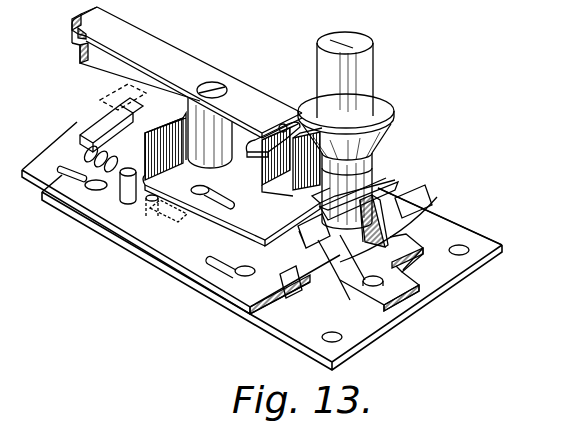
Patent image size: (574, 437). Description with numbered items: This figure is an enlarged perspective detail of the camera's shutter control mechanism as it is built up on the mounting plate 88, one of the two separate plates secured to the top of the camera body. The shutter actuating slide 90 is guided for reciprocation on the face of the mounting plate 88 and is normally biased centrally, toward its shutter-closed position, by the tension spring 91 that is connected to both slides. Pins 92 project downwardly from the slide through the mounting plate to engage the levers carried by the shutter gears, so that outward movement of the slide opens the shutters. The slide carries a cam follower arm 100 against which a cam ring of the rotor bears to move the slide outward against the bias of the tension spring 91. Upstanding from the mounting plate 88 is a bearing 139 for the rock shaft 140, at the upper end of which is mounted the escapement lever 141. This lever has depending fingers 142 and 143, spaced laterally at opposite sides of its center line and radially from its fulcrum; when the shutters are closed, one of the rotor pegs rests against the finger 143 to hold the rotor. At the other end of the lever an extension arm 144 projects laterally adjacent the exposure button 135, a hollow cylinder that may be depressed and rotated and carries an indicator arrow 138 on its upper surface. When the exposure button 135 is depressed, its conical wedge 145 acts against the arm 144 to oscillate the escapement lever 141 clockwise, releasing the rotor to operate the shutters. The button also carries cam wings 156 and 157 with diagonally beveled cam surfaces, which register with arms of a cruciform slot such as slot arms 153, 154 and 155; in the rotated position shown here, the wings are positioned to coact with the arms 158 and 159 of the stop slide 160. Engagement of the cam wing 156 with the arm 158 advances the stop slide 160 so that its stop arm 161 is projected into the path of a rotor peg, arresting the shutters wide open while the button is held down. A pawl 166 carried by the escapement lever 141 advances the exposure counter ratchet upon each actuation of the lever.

The mounting plate 88 is at (290, 318).
The shutter actuating slide 90 is at (190, 256).
The tension spring 91 is at (100, 160).
The pins 92 is at (150, 202).
The cam follower arm 100 is at (100, 135).
The exposure button 135 is at (360, 87).
The indicator arrow 138 is at (361, 47).
The bearing 139 is at (218, 133).
The rock shaft 140 is at (212, 84).
The escapement lever 141 is at (172, 62).
The depending finger 142 is at (80, 55).
The depending finger 143 is at (72, 33).
The extension arm 144 is at (330, 208).
The conical wedge 145 is at (394, 120).
The slot arm 153 is at (383, 200).
The slot arm 154 is at (367, 257).
The slot arm 155 is at (318, 247).
The cam wing 156 is at (373, 157).
The cam wing 157 is at (402, 226).
The arm 158 is at (300, 212).
The arm 159 is at (455, 213).
The stop slide 160 is at (240, 215).
The stop arm 161 is at (116, 101).
The pawl 166 is at (263, 142).